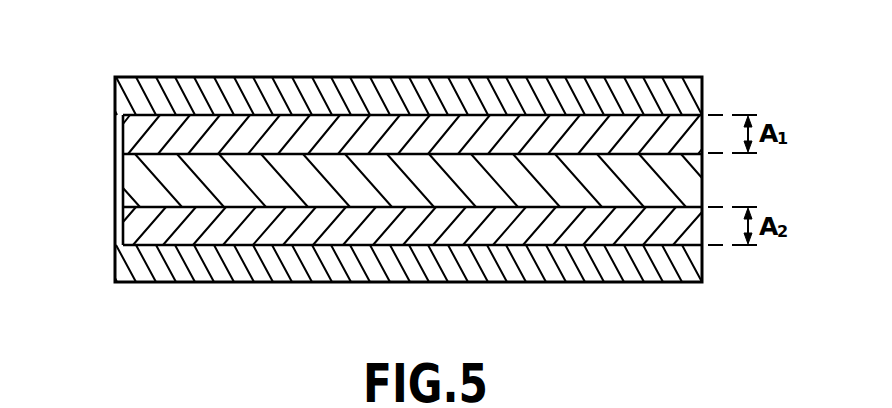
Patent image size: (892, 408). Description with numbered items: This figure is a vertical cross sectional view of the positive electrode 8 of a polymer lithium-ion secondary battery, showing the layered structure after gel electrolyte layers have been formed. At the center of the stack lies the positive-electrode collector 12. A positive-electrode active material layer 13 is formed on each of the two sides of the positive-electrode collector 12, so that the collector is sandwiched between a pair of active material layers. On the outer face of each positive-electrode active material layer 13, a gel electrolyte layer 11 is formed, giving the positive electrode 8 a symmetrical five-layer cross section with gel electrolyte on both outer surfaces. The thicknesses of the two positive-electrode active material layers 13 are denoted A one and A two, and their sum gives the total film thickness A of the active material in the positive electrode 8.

The positive electrode 8 is at (624, 67).
The gel electrolyte layer 11 is at (137, 94).
The positive-electrode collector 12 is at (140, 183).
The positive-electrode active material layer 13 is at (140, 140).